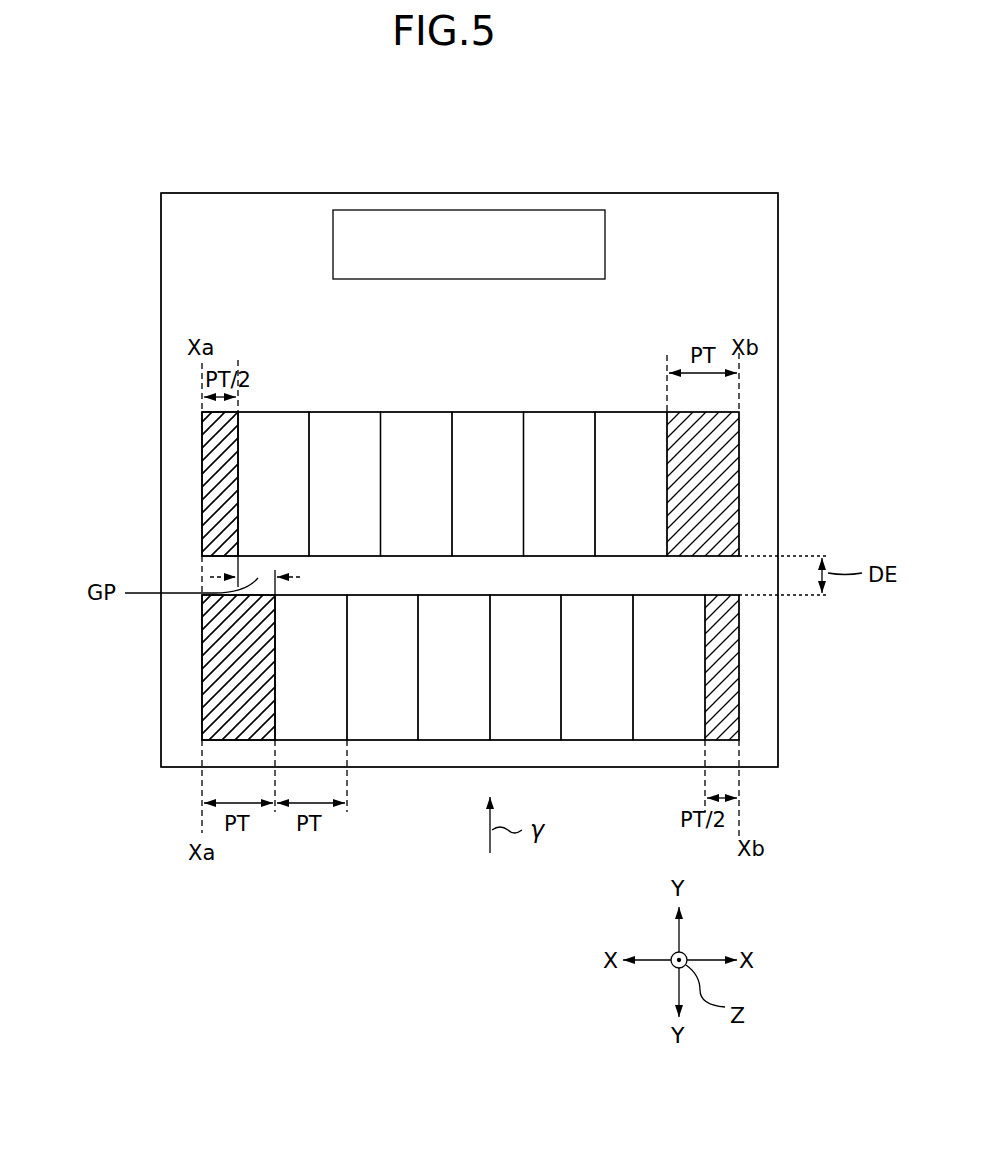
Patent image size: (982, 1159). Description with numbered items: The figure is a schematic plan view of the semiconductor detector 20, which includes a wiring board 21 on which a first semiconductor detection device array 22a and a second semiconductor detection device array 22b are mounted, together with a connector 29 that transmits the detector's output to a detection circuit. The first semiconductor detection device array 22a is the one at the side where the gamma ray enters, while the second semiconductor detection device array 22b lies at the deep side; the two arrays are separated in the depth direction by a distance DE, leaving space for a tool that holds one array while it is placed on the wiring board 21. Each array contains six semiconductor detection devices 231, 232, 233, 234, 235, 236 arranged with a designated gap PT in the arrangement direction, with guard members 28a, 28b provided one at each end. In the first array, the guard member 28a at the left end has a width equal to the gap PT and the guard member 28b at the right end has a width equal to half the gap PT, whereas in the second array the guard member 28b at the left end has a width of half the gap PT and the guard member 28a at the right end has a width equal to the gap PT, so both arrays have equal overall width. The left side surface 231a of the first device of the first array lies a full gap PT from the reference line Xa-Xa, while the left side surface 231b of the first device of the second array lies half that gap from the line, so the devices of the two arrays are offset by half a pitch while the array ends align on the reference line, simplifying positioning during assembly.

The semiconductor detector 20 is at (128, 179).
The wiring board 21 is at (778, 718).
The connector 29 is at (605, 244).
The first semiconductor detection device array 22a is at (112, 657).
The second semiconductor detection device array 22b is at (112, 472).
The left side surface of semiconductor detection device 23_1 of the first array 231a is at (275, 687).
The left side surface of semiconductor detection device 23_1 of the second array 231b is at (202, 428).
The guard member 28a is at (727, 480).
The guard member 28b is at (202, 511).
The semiconductor detection device 231 is at (291, 497).
The semiconductor detection device 232 is at (362, 497).
The semiconductor detection device 233 is at (433, 497).
The semiconductor detection device 234 is at (505, 497).
The semiconductor detection device 235 is at (576, 497).
The semiconductor detection device 236 is at (648, 497).